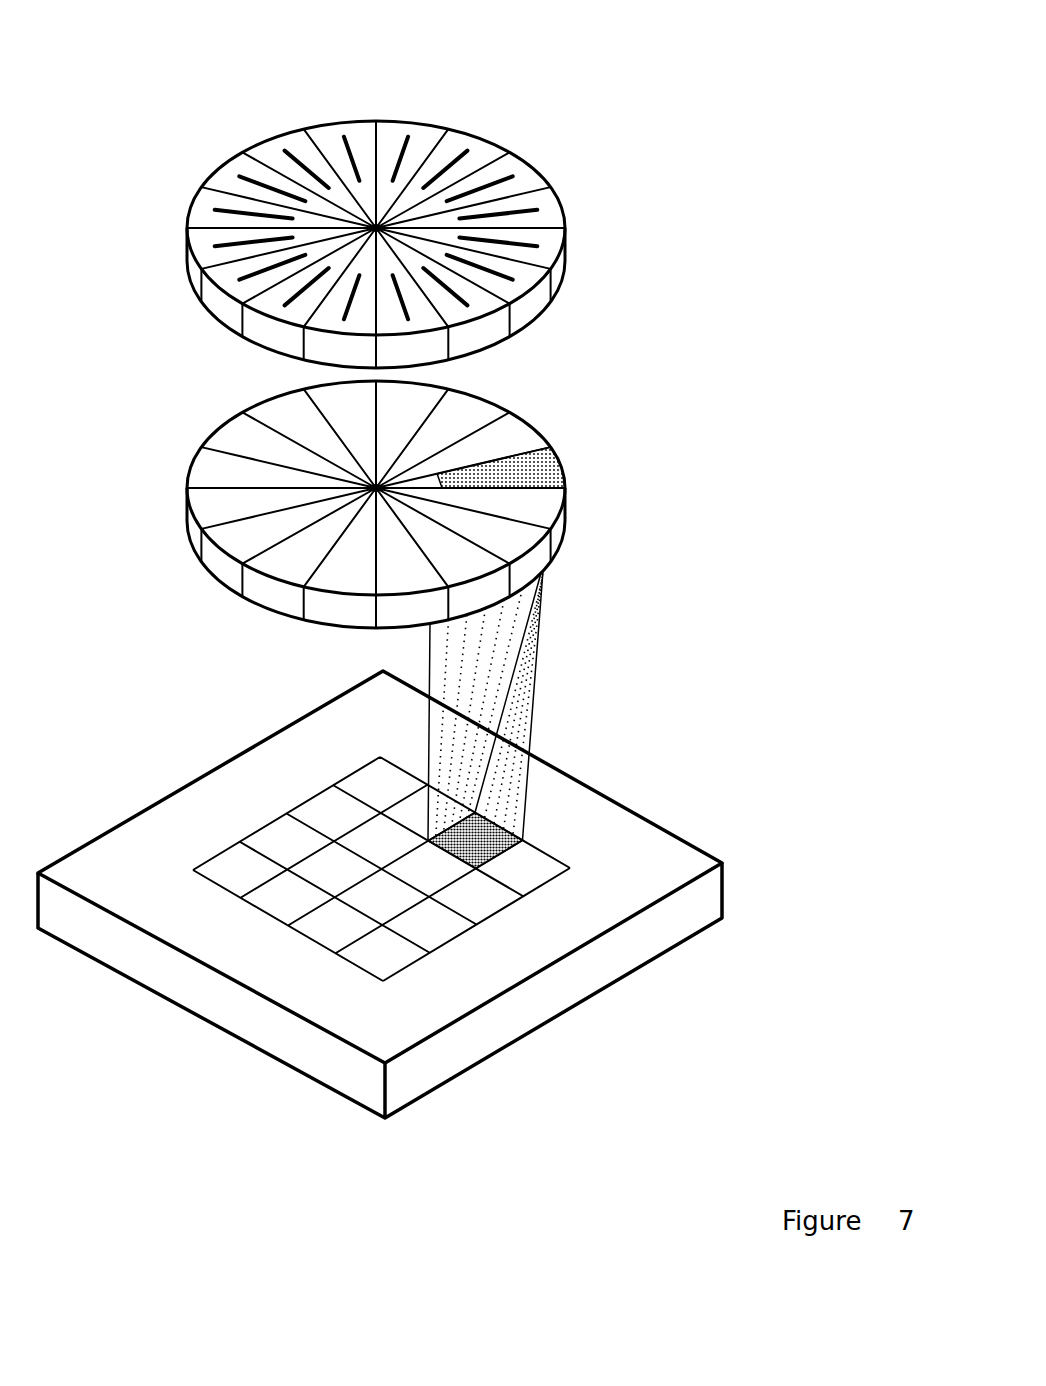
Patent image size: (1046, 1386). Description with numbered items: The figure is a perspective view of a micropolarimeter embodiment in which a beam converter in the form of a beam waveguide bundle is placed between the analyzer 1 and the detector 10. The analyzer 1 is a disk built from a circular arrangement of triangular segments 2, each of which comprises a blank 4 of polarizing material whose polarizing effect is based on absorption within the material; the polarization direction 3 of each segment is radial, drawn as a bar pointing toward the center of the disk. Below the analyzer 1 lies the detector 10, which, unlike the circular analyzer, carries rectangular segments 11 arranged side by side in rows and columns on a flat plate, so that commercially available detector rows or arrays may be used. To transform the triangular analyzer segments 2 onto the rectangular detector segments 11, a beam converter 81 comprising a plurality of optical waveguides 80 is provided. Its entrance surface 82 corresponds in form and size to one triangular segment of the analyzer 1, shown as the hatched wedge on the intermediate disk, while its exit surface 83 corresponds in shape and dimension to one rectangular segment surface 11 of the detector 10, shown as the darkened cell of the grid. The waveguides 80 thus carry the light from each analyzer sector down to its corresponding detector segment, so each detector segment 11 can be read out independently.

The analyzer 1 is at (438, 184).
The segments 2 is at (393, 133).
The polarization direction 3 is at (260, 183).
The blank 4 is at (223, 322).
The detector 10 is at (463, 945).
The segments 11 is at (497, 893).
The waveguides 80 is at (561, 454).
The beam converter 81 is at (572, 697).
The entrance surface 82 is at (565, 462).
The exit surface 83 is at (524, 836).